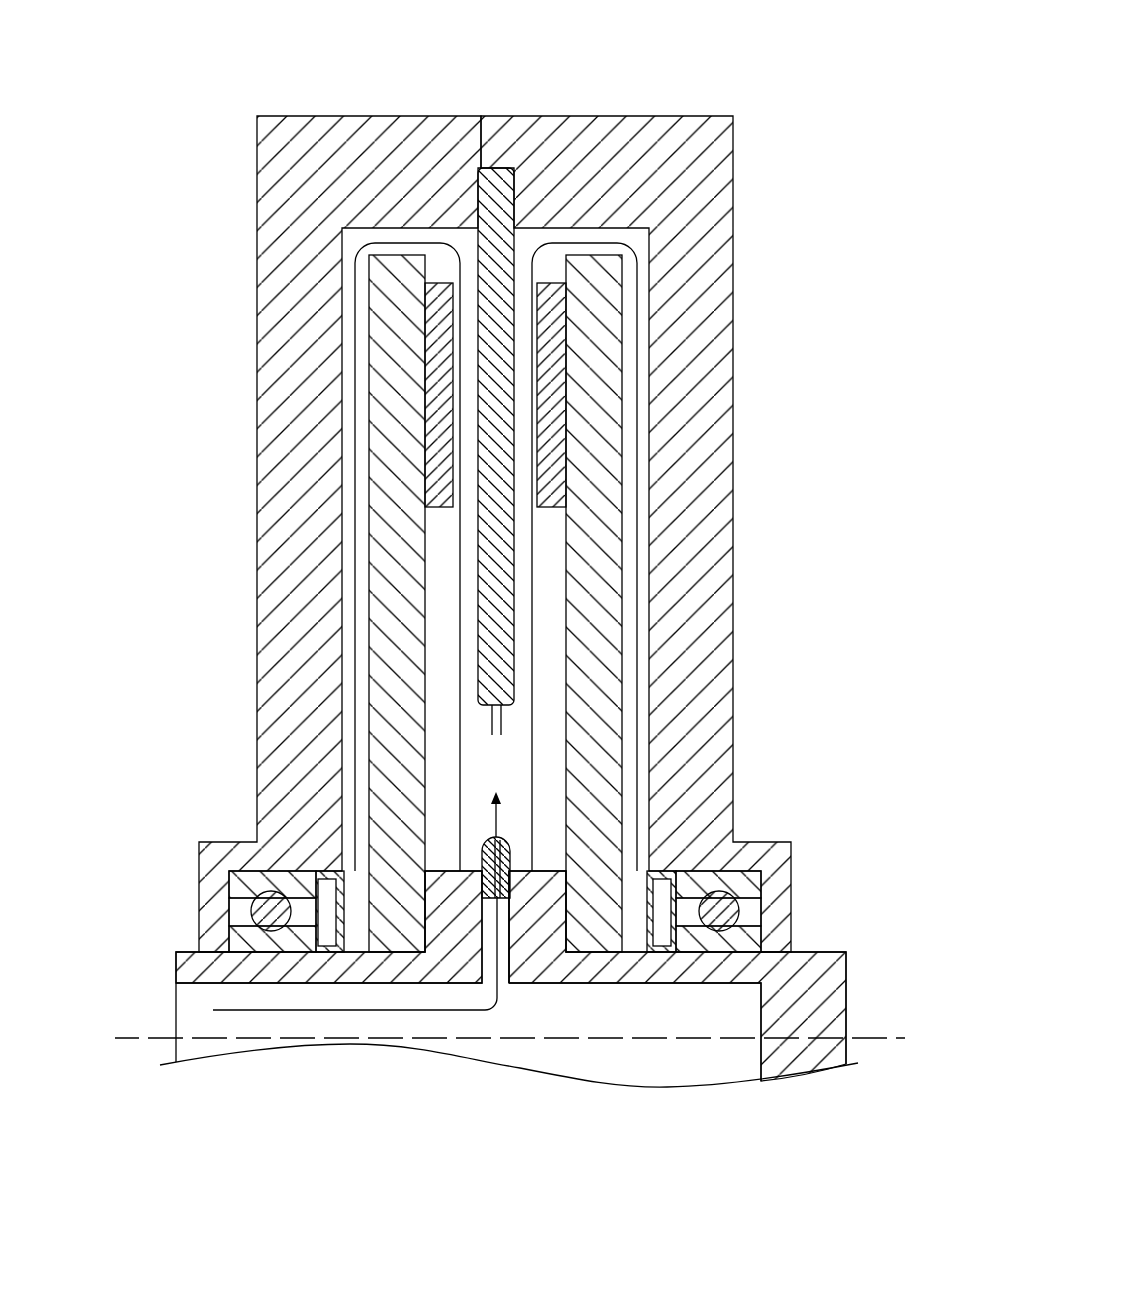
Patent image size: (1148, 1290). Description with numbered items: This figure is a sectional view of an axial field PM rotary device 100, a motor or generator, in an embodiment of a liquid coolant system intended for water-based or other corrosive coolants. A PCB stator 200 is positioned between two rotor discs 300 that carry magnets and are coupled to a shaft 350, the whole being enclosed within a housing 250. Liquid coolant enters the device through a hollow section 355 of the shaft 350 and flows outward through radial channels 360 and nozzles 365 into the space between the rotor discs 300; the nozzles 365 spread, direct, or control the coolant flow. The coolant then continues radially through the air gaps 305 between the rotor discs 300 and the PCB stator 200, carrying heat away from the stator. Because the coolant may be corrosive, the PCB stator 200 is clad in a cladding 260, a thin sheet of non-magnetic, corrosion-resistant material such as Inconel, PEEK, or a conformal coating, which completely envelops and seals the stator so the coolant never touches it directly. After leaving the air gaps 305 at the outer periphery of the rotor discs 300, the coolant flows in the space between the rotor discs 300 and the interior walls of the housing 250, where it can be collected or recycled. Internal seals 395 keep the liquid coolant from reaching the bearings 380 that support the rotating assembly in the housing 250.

The axial field PM rotary device 100 is at (797, 38).
The PCB stator 200 is at (500, 203).
The housing 250 is at (578, 135).
The cladding 260 is at (397, 652).
The rotor discs 300 is at (515, 503).
The air gaps 305 is at (469, 452).
The shaft 350 is at (819, 952).
The hollow section 355 is at (539, 1000).
The radial channels 360 is at (512, 922).
The nozzles 365 is at (478, 848).
The bearings 380 is at (229, 920).
The internal seals 395 is at (332, 962).